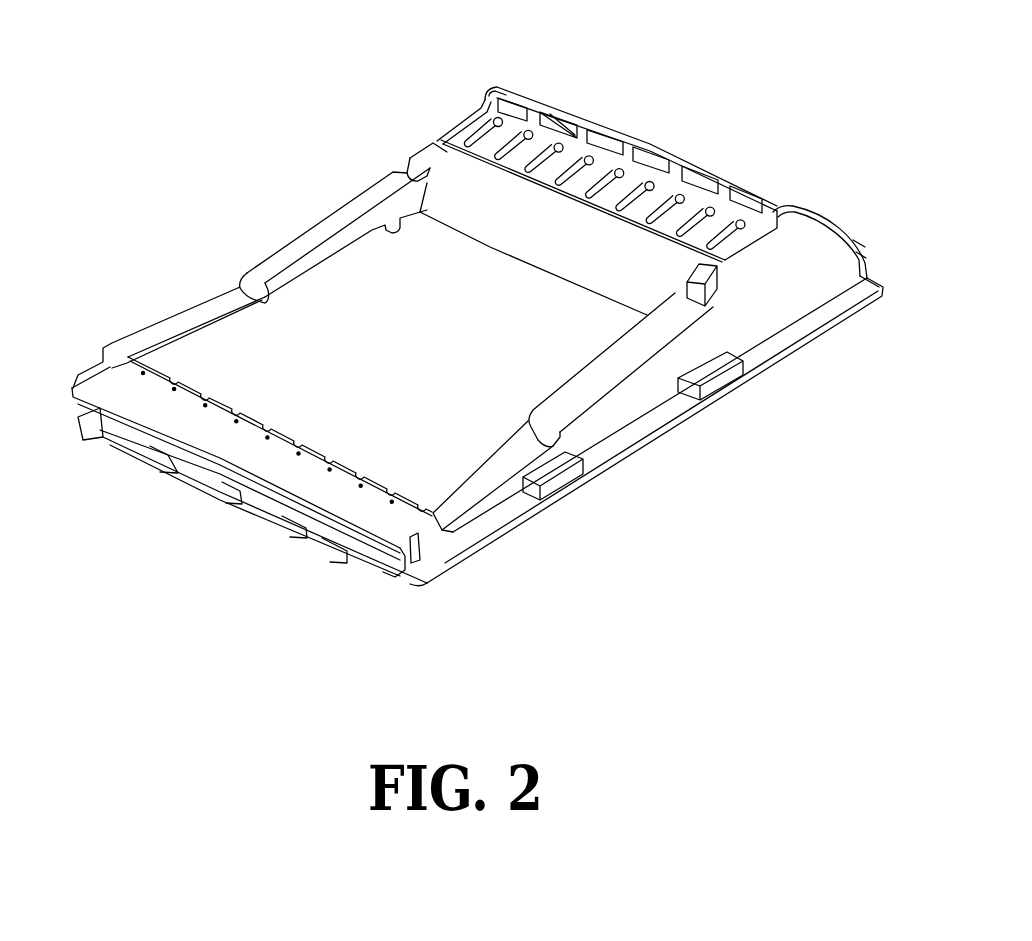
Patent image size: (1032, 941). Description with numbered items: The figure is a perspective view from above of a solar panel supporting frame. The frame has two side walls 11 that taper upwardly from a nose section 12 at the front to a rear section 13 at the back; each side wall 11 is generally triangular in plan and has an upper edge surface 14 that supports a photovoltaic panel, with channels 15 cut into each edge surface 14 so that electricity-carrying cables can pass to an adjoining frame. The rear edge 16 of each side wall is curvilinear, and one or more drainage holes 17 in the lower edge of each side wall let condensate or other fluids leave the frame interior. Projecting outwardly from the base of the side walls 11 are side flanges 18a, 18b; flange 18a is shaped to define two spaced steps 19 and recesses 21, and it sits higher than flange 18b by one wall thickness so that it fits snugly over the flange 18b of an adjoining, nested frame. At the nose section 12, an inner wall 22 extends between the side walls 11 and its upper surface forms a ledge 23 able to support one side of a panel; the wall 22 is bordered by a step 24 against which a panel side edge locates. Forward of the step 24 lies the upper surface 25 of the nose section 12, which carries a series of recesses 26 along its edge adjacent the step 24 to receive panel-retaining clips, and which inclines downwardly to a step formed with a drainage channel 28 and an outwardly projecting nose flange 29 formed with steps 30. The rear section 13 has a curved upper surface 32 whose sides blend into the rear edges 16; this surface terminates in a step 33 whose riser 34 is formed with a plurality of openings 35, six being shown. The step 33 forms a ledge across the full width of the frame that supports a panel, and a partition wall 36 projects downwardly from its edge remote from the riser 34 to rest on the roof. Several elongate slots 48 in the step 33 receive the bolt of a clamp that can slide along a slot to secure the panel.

The side wall 11 is at (775, 318).
The nose section 12 is at (399, 594).
The rear section 13 is at (800, 173).
The upper edge surface 14 is at (580, 388).
The channel 15 is at (705, 300).
The rear edge 16 is at (852, 238).
The drainage hole 17 is at (375, 235).
The side flange 18a is at (648, 433).
The side flange 18b is at (133, 345).
The step 19 is at (715, 372).
The recess 21 is at (578, 492).
The inner wall 22 is at (338, 464).
The ledge 23 is at (277, 430).
The step 24 is at (198, 388).
The upper surface 25 is at (303, 483).
The recess 26 is at (243, 415).
The drainage channel 28 is at (380, 567).
The nose flange 29 is at (178, 468).
The step 30 is at (117, 430).
The upper surface 32 is at (623, 130).
The step 33 is at (547, 170).
The riser 34 is at (482, 92).
The opening 35 is at (700, 188).
The partition wall 36 is at (617, 270).
The elongate slot 48 is at (478, 133).